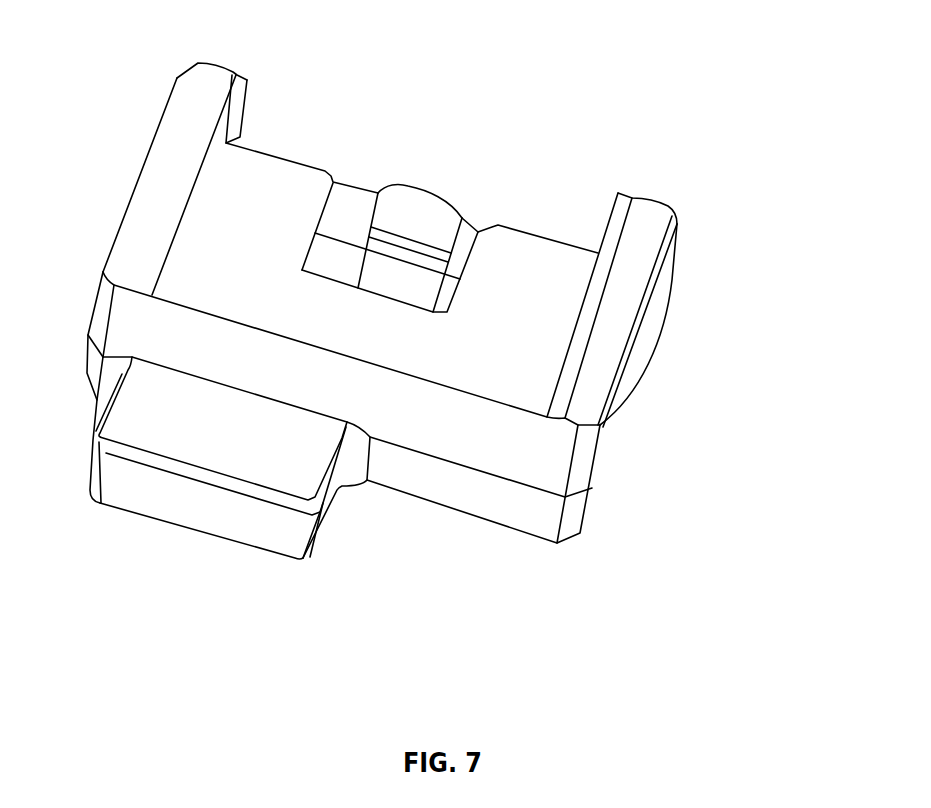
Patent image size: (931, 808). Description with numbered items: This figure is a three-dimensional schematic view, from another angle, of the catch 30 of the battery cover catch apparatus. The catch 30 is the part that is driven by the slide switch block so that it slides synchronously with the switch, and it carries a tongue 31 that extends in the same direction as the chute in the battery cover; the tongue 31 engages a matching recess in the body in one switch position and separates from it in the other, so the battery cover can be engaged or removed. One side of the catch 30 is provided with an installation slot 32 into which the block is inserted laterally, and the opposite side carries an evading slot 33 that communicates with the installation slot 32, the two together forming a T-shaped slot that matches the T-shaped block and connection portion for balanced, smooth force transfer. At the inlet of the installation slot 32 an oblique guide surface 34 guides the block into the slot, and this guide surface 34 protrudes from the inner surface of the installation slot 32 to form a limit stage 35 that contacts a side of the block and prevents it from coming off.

The catch 30 is at (664, 350).
The tongue 31 is at (268, 460).
The installation slot 32 is at (333, 222).
The evading slot 33 is at (313, 242).
The guide surface 34 is at (430, 223).
The limit stage 35 is at (428, 258).